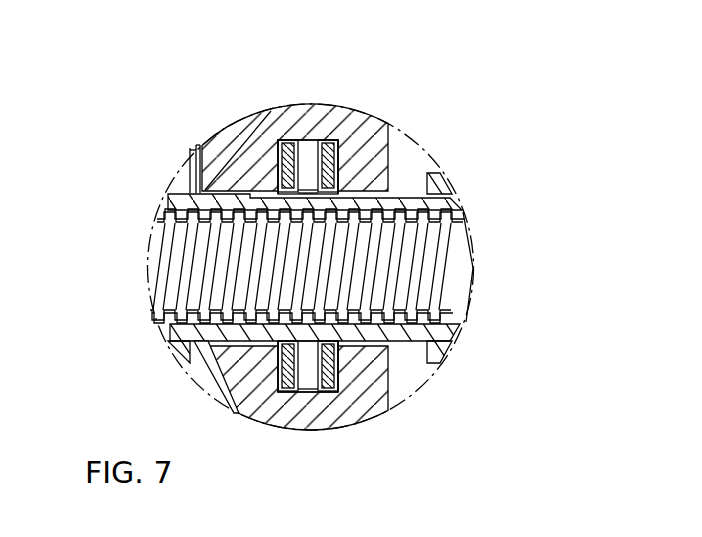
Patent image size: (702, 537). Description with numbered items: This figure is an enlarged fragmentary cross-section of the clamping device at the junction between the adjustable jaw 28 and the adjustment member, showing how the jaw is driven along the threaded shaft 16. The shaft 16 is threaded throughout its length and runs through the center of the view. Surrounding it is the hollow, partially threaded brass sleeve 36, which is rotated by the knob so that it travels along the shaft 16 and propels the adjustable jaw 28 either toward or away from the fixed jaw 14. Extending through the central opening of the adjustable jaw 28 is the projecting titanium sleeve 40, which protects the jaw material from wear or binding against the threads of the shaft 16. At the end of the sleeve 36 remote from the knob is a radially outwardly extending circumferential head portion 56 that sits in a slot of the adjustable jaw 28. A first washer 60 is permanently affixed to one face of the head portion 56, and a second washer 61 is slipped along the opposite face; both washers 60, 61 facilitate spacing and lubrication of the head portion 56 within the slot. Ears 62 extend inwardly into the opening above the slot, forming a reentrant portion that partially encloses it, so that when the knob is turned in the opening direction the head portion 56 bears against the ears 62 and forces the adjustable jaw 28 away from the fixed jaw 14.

The fixed jaw 14 is at (174, 152).
The threaded shaft 16 is at (358, 267).
The adjustable jaw 28 is at (298, 124).
The sleeve 36 is at (361, 261).
The projecting sleeve 40 is at (152, 377).
The circumferential head portion 56 is at (280, 210).
The first washer 60 is at (330, 257).
The second washer 61 is at (252, 230).
The ears 62 is at (445, 274).